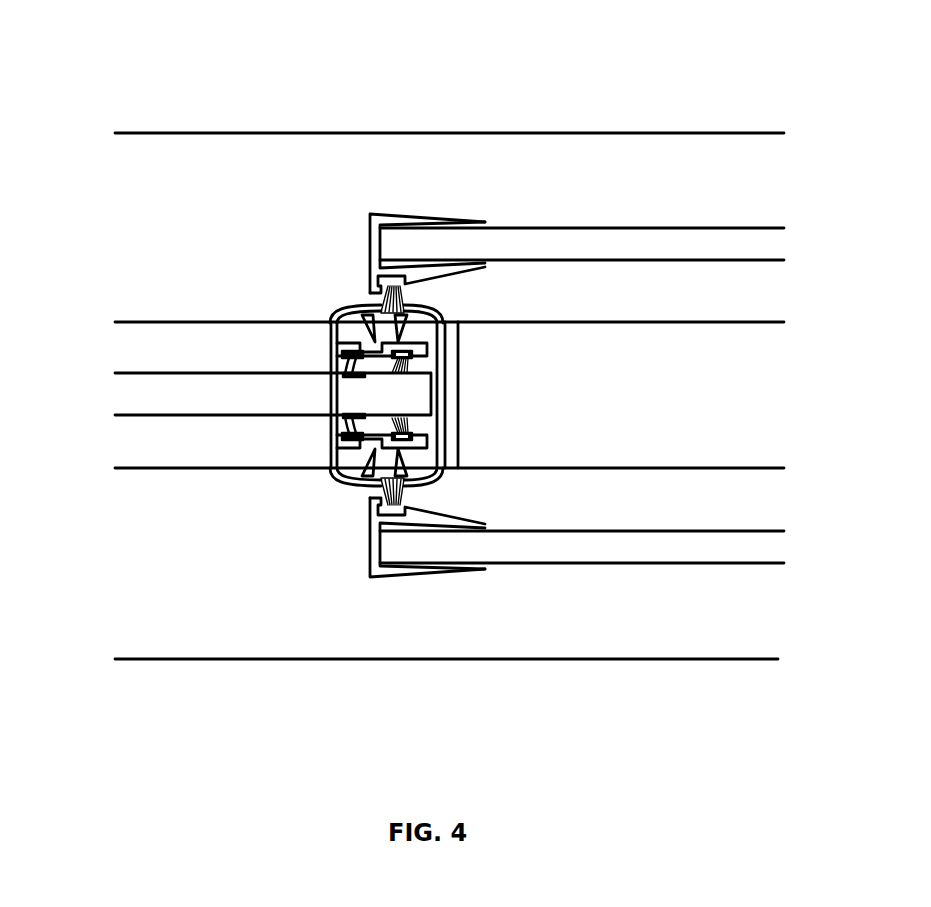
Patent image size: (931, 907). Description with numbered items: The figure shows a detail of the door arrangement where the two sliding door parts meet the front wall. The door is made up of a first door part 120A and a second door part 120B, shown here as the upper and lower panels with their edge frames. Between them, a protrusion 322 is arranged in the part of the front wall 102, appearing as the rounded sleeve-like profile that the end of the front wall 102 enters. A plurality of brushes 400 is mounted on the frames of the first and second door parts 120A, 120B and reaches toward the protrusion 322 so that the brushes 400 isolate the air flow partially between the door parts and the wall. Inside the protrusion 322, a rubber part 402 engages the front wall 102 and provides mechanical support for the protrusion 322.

The front wall 102 is at (148, 416).
The first door part 120A is at (627, 564).
The second door part 120B is at (568, 227).
The protrusion 322 is at (335, 320).
The brushes 400 is at (376, 280).
The rubber part 402 is at (345, 362).